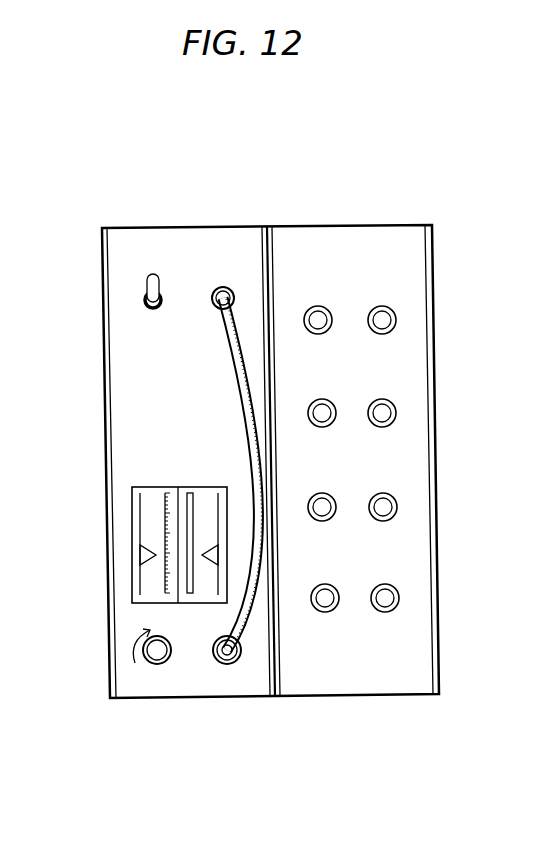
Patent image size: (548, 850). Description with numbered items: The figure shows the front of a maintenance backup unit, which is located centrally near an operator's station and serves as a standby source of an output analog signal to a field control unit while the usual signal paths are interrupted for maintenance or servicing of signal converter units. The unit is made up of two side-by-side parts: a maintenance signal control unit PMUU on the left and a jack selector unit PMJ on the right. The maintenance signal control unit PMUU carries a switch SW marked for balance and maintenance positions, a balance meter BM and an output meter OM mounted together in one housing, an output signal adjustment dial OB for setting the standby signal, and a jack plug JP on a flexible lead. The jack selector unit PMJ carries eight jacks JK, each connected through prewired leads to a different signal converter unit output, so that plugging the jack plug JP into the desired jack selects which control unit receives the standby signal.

The switch SW is at (145, 290).
The balance meter BM is at (132, 533).
The output meter OM is at (207, 487).
The output signal adjustment dial OB is at (133, 627).
The jack plug JP is at (218, 640).
The jacks JK is at (398, 500).
The maintenance signal control unit PMUU is at (147, 493).
The jack selector unit PMJ is at (376, 479).